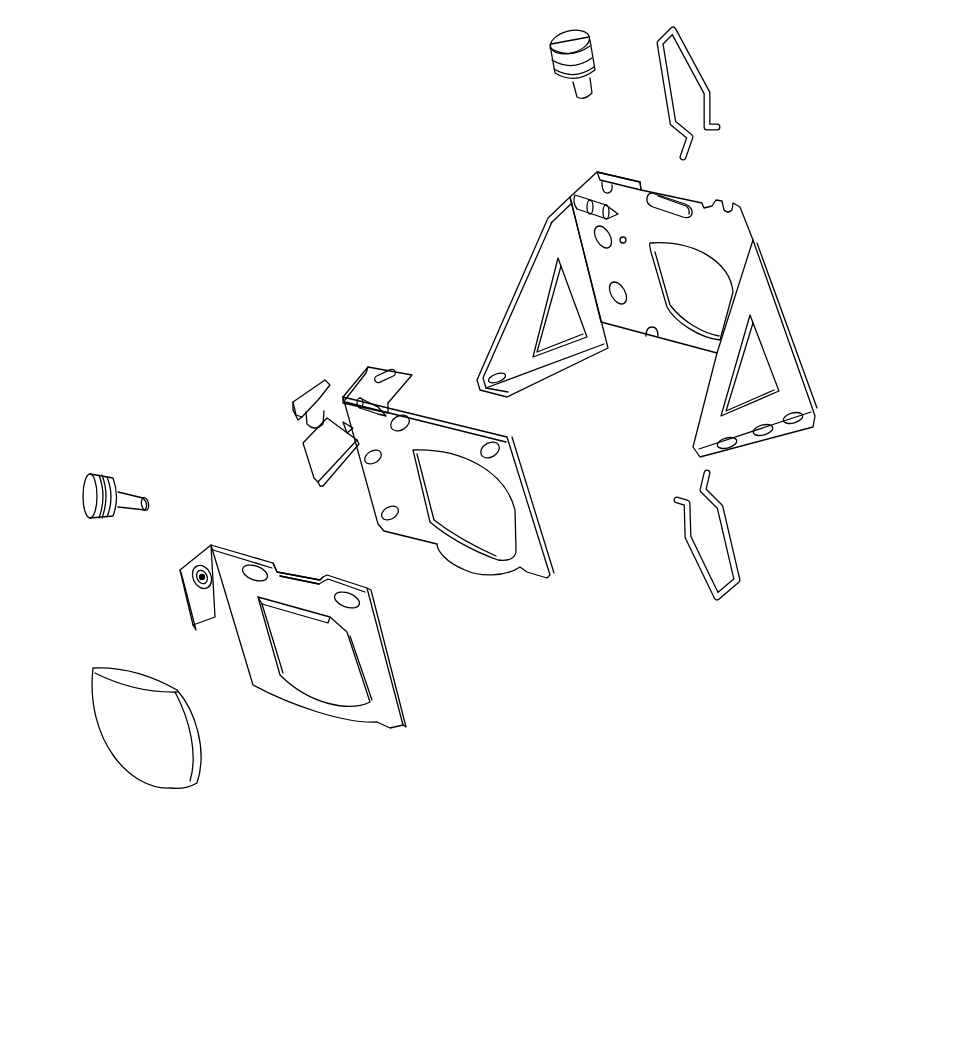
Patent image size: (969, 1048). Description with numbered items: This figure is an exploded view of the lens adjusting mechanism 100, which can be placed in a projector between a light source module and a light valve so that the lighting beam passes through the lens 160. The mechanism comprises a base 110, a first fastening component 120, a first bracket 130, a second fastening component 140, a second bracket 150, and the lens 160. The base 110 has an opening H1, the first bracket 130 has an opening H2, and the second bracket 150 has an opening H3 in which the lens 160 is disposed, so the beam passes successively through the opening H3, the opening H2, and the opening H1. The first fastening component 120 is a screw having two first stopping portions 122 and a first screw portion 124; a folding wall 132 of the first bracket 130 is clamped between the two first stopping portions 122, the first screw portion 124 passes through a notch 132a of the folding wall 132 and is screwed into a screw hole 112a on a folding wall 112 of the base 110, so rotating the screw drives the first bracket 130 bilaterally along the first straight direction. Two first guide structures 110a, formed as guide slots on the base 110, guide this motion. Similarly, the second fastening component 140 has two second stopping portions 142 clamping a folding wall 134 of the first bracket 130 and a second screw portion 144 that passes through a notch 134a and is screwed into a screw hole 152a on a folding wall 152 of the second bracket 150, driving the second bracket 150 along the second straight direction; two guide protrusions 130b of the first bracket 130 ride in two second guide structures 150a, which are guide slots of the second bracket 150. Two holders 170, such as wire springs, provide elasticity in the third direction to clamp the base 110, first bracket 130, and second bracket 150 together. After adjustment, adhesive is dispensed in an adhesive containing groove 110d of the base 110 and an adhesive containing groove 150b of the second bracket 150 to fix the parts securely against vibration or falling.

The lens adjusting mechanism 100 is at (843, 768).
The base 110 is at (757, 283).
The first guide structures 110a is at (607, 297).
The adhesive containing groove 110d is at (687, 196).
The folding wall 112 is at (607, 170).
The screw hole 112a is at (600, 182).
The opening H1 is at (675, 317).
The first fastening component 120 is at (535, 38).
The first stopping portions 122 is at (553, 58).
The first screw portion 124 is at (572, 89).
The holders 170 is at (698, 68).
The first bracket 130 is at (528, 547).
The guide protrusions 130b is at (405, 424).
The folding wall 132 is at (363, 389).
The notch 132a is at (392, 371).
The folding wall 134 is at (317, 453).
The notch 134a is at (322, 415).
The opening H2 is at (441, 525).
The second fastening component 140 is at (80, 473).
The second stopping portions 142 is at (90, 510).
The second screw portion 144 is at (133, 490).
The second bracket 150 is at (380, 667).
The second guide structures 150a is at (249, 562).
The adhesive containing groove 150b is at (297, 568).
The folding wall 152 is at (198, 600).
The screw hole 152a is at (222, 580).
The opening H3 is at (303, 686).
The lens 160 is at (143, 767).